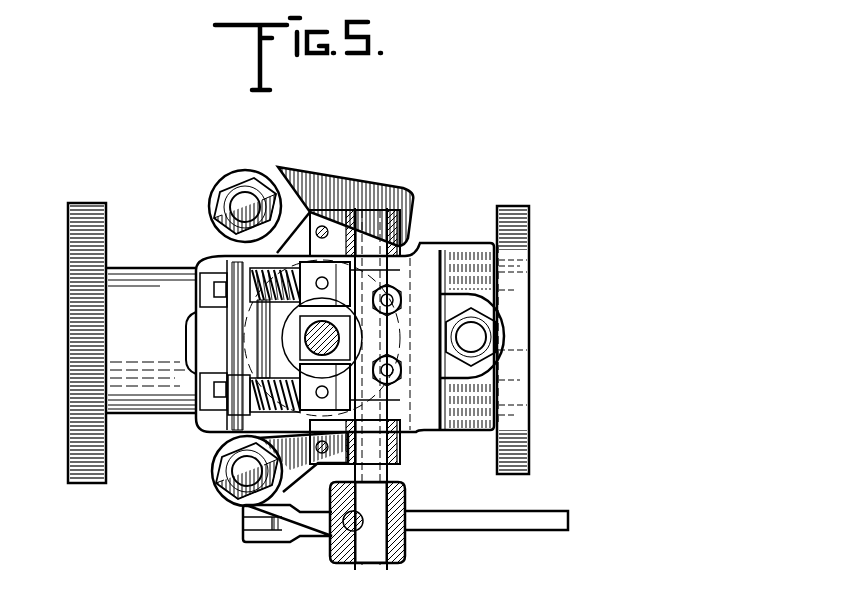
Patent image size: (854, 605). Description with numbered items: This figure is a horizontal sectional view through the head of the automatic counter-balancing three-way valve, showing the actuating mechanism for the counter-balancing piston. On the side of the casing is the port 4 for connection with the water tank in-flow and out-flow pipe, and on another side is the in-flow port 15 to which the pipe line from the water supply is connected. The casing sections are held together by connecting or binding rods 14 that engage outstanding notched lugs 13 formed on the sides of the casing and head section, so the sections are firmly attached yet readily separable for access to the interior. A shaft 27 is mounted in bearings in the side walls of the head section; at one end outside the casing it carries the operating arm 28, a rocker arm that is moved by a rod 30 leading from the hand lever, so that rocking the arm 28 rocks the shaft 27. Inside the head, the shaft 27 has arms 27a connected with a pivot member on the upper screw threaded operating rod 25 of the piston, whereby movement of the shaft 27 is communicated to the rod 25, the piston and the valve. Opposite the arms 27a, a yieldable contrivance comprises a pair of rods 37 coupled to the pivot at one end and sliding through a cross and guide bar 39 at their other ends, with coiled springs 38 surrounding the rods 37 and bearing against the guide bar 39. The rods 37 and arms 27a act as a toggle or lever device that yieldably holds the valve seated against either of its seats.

The port 4 is at (68, 340).
The notched lugs 13 is at (256, 185).
The connecting or binding rods 14 is at (240, 210).
The in-flow port 15 is at (350, 172).
The operating rod 25 is at (328, 340).
The shaft 27 is at (365, 240).
The arms 27a is at (378, 273).
The operating arm 28 is at (316, 523).
The rod 30 is at (496, 522).
The rods 37 is at (200, 300).
The coiled springs 38 is at (225, 257).
The cross and guide bar 39 is at (240, 397).